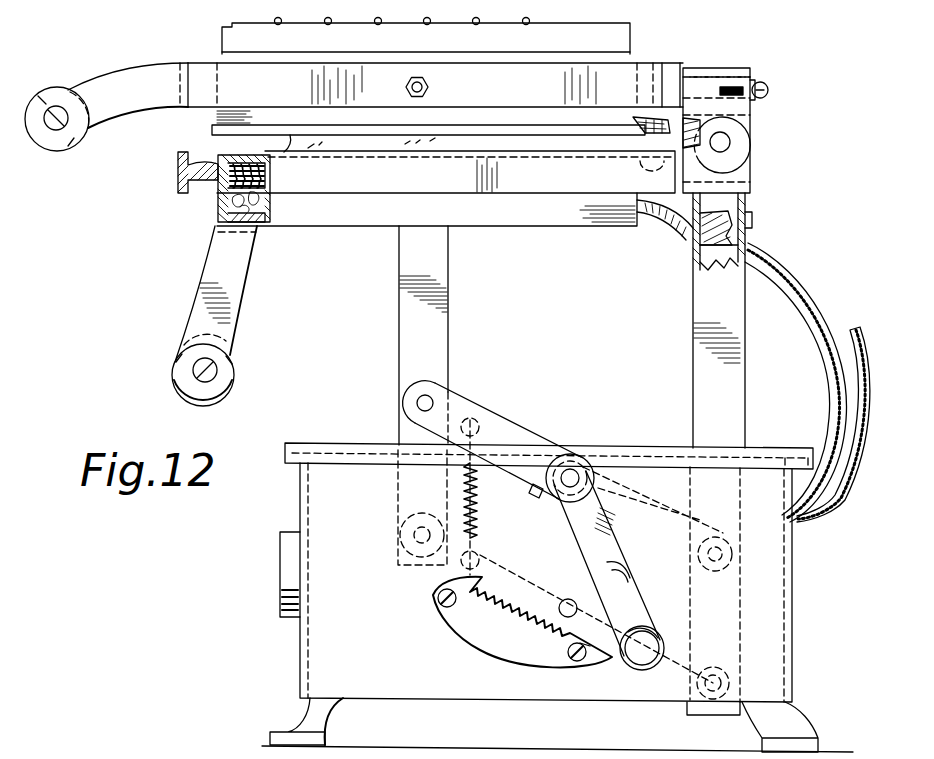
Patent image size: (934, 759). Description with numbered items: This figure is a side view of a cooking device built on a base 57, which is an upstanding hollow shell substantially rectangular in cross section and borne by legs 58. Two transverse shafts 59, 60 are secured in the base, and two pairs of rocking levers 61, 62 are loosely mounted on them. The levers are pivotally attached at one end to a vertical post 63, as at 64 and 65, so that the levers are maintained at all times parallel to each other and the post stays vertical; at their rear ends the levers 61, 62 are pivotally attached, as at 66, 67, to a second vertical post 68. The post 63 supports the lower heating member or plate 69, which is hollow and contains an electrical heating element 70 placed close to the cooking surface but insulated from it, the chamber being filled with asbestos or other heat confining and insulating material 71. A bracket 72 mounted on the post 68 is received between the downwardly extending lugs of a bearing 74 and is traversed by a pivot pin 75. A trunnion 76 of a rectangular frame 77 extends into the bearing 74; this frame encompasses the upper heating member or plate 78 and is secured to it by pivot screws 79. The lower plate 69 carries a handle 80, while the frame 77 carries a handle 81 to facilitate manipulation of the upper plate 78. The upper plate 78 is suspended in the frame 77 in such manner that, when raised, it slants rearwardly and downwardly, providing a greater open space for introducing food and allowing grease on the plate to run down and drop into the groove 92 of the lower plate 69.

The base 57 is at (780, 580).
The legs 58 is at (777, 720).
The transverse shaft 59 is at (566, 598).
The transverse shaft 60 is at (572, 466).
The rocking levers 61 is at (664, 634).
The rocking levers 62 is at (503, 425).
The vertical post 63 is at (447, 342).
The pivot point 64 is at (414, 536).
The pivot point 65 is at (416, 404).
The pivot point 66 is at (721, 680).
The pivot point 67 is at (722, 554).
The vertical post 68 is at (738, 340).
The heating member or plate 69 is at (350, 190).
The electrical heating element 70 is at (271, 174).
The heat confining and insulating material 71 is at (262, 226).
The bracket 72 is at (745, 175).
The bearing 74 is at (735, 70).
The pivot pin 75 is at (724, 140).
The trunnion 76 is at (700, 80).
The rectangular frame 77 is at (614, 78).
The upper heating member or plate 78 is at (226, 57).
The pivot screws 79 is at (430, 87).
The handle 80 is at (198, 292).
The handle 81 is at (130, 66).
The groove 92 is at (200, 165).